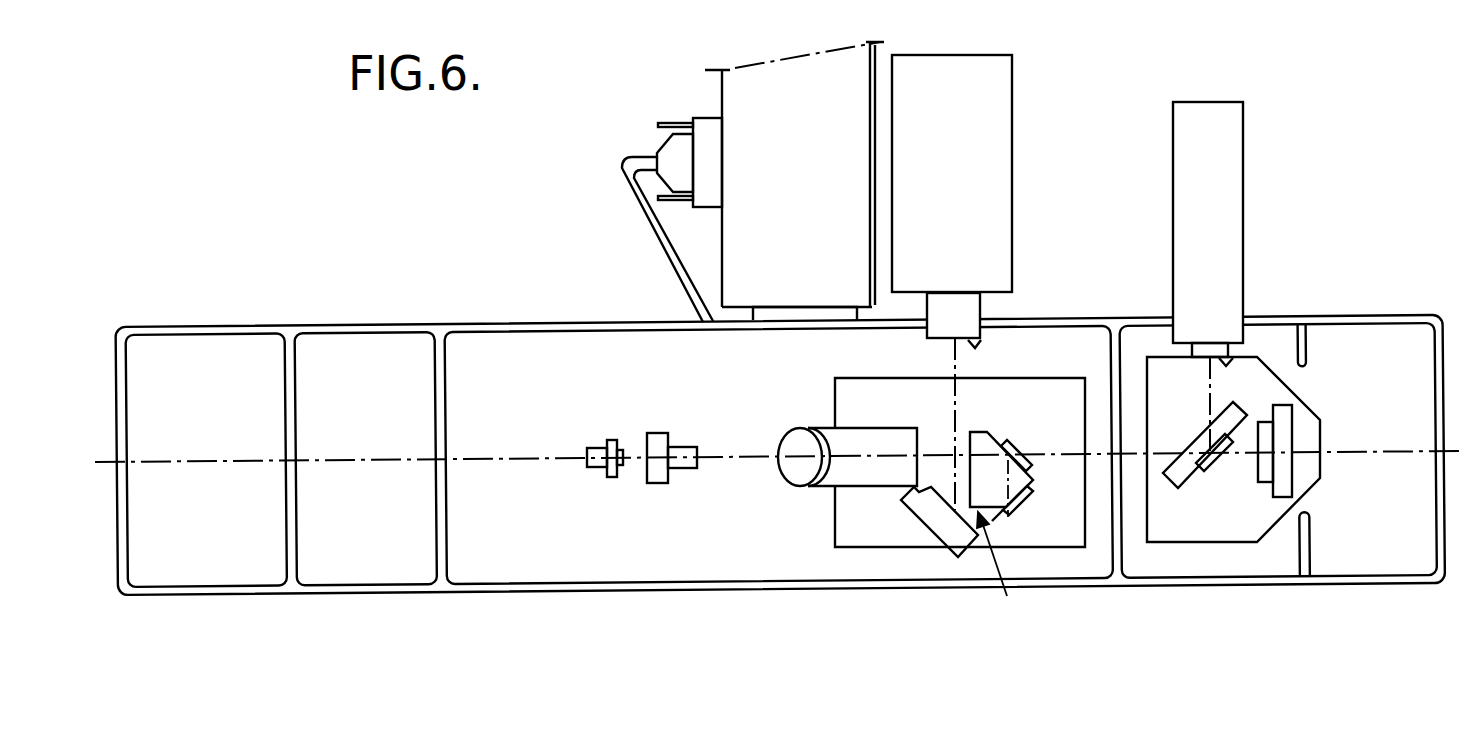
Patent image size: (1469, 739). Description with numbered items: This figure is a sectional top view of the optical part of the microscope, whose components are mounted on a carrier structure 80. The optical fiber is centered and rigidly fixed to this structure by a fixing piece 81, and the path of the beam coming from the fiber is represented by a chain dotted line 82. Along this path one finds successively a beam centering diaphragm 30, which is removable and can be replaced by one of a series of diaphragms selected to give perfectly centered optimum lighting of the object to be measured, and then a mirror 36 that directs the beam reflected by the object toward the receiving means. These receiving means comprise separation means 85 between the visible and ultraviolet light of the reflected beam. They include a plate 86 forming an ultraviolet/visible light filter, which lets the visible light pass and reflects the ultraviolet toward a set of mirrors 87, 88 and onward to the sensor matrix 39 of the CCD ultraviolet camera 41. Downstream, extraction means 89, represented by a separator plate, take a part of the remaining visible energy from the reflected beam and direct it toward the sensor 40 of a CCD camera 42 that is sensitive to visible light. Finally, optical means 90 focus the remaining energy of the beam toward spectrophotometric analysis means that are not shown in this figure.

The beam centering diaphragm 30 is at (660, 472).
The mirror 36 is at (800, 465).
The sensor matrix 39 is at (979, 344).
The sensor matrix 40 is at (1230, 358).
The CCD ultraviolet camera 41 is at (988, 178).
The CCD camera sensitive to visible light 42 is at (1215, 183).
The carrier structure 80 is at (488, 590).
The fixing piece 81 is at (597, 452).
The chain dotted line 82 is at (955, 365).
The separation means 85 is at (1005, 571).
The plate 86 is at (1008, 443).
The mirror 87 is at (1018, 507).
The mirror 88 is at (940, 522).
The extraction means 89 is at (1219, 466).
The optical means 90 is at (1280, 427).